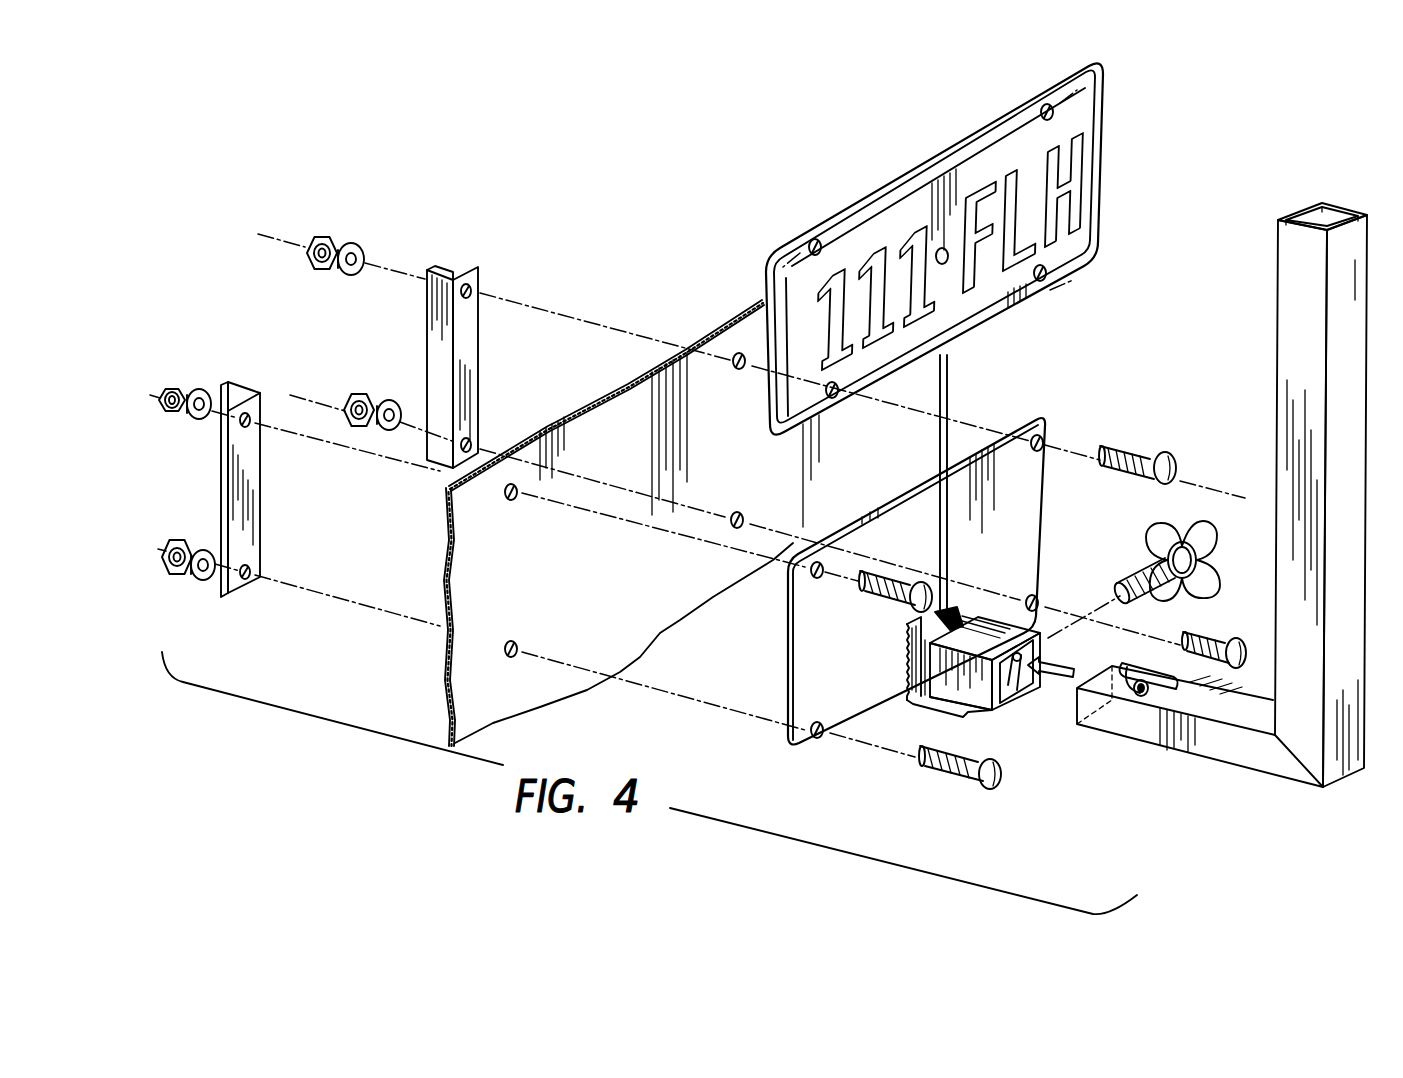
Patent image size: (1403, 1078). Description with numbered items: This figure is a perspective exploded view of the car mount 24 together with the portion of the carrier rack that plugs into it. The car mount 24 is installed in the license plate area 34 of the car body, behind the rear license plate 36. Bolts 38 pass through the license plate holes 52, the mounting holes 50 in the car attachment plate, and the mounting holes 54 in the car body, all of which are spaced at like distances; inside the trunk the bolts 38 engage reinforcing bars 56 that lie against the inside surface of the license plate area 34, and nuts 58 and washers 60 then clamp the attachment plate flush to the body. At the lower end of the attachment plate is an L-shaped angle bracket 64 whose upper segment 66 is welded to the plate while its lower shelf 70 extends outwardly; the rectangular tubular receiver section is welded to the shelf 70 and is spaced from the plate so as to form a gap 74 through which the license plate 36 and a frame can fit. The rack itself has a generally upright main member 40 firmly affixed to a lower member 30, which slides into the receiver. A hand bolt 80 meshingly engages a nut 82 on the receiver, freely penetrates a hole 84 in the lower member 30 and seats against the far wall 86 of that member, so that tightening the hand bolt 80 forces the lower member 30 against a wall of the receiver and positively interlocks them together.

The car mount 24 is at (1085, 418).
The lower member 30 is at (1218, 738).
The license plate area 34 is at (634, 578).
The rear license plate 36 is at (934, 160).
The bolts 38 is at (1178, 470).
The main member 40 is at (1295, 295).
The mounting holes 50 is at (1036, 601).
The license plate holes 52 is at (815, 240).
The mounting holes 54 is at (511, 641).
The reinforcing bars 56 is at (250, 524).
The nuts 58 is at (177, 385).
The washers 60 is at (203, 388).
The L-shaped angle bracket 64 is at (891, 695).
The upper segment 66 is at (907, 668).
The lower shelf 70 is at (962, 716).
The gap 74 is at (963, 678).
The hand bolt 80 is at (1207, 553).
The nut 82 is at (1015, 668).
The hole 84 is at (1134, 698).
The far wall 86 is at (1013, 695).